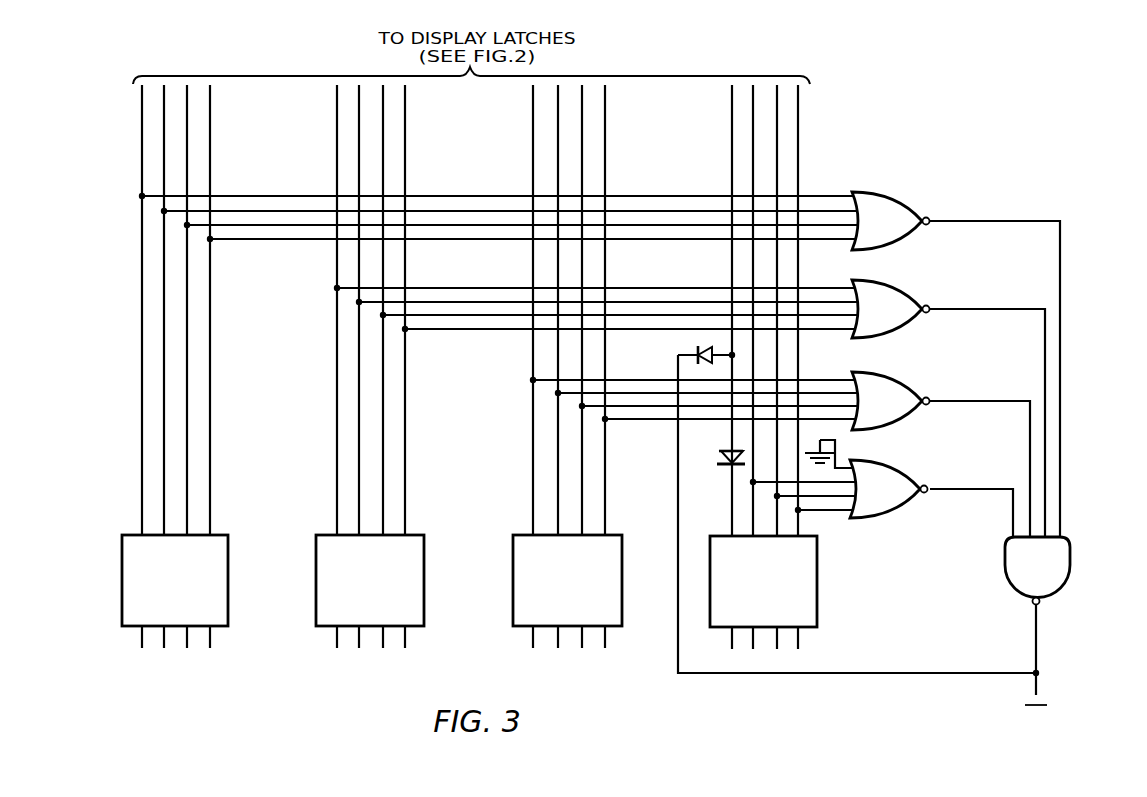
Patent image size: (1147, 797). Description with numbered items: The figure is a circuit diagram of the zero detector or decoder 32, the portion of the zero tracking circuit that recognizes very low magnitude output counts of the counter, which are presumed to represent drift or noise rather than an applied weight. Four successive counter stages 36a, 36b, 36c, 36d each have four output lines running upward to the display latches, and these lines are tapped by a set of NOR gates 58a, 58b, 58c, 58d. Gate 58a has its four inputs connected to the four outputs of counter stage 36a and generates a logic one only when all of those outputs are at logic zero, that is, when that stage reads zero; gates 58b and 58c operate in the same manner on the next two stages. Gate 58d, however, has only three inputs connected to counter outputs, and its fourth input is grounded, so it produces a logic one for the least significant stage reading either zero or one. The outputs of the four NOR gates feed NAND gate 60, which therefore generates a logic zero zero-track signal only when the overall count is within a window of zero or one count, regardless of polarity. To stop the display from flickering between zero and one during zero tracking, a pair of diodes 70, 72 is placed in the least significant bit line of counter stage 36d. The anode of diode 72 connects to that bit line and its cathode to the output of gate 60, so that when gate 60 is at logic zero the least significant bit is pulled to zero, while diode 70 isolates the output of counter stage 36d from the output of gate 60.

The zero detector or decoder 32 is at (1088, 430).
The counter stage 36a is at (128, 601).
The counter stage 36b is at (331, 605).
The counter stage 36c is at (528, 605).
The counter stage 36d is at (806, 607).
The NOR gate 58a is at (893, 201).
The NOR gate 58b is at (902, 297).
The NOR gate 58c is at (903, 390).
The NOR gate 58d is at (903, 478).
The NAND gate 60 is at (1056, 563).
The diode 70 is at (722, 452).
The diode 72 is at (700, 347).